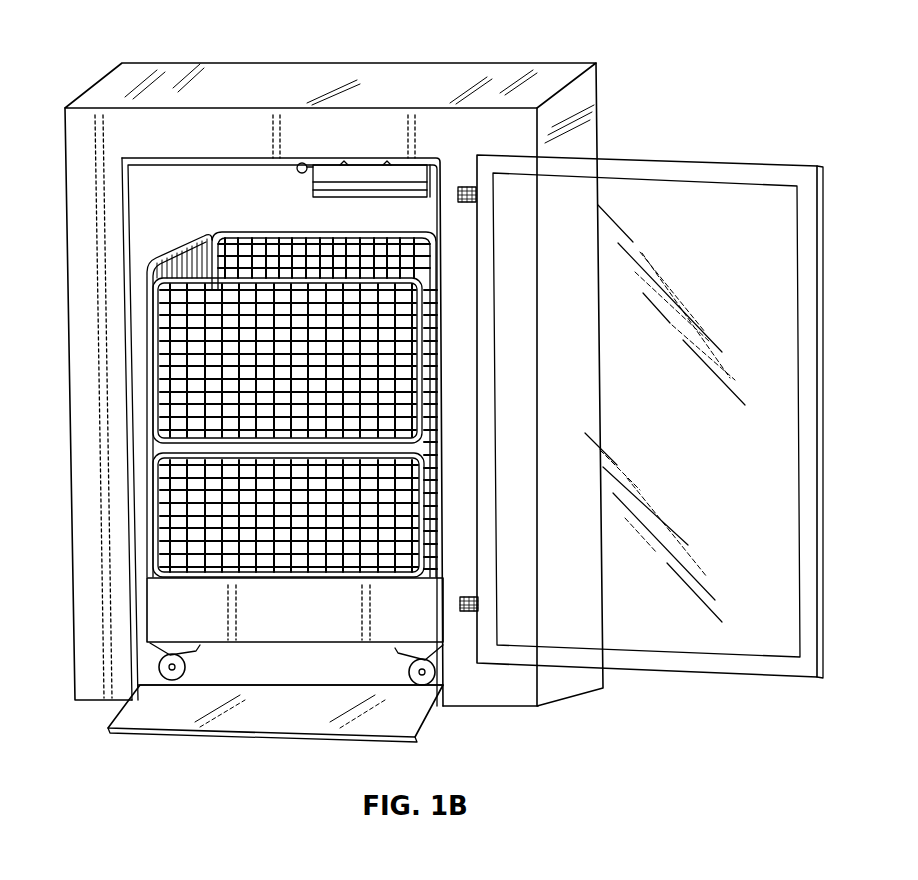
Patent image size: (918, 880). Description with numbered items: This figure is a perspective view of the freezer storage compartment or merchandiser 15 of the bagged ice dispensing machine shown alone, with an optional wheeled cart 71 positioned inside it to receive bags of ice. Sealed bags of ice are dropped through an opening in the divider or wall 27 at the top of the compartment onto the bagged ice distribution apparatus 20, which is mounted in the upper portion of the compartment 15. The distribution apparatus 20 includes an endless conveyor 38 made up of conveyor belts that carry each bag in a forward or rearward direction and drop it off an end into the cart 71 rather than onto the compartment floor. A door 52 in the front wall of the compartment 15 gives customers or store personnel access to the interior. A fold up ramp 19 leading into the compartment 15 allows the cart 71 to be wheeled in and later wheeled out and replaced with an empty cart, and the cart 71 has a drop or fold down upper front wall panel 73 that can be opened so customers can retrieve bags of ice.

The freezer storage compartment 15 is at (157, 240).
The fold up ramp 19 is at (155, 715).
The bagged ice distribution apparatus 20 is at (222, 176).
The divider or wall 27 is at (544, 86).
The endless conveyor 38 is at (365, 183).
The door 52 is at (686, 176).
The wheeled cart 71 is at (405, 270).
The fold down upper front wall panel 73 is at (160, 398).